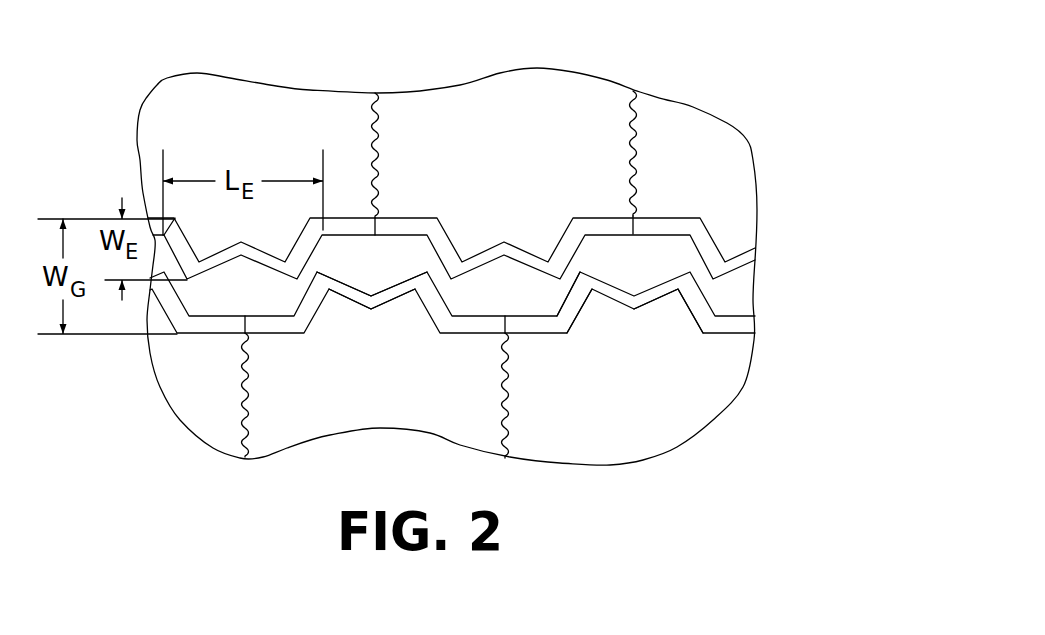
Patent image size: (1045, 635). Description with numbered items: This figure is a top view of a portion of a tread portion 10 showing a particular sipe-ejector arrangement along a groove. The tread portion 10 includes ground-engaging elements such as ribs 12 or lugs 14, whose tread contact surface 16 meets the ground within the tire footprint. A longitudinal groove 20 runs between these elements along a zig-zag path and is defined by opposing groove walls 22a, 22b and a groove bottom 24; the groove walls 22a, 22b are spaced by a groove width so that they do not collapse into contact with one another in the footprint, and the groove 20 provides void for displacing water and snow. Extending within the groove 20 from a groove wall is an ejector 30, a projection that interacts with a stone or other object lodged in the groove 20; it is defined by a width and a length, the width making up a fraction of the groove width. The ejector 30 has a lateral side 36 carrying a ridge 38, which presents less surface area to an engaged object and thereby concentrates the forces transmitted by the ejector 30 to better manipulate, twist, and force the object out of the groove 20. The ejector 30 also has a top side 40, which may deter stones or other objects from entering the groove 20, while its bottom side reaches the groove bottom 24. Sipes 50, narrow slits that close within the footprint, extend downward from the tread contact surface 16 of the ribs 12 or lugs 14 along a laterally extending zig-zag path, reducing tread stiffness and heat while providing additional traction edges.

The tread portion 10 is at (713, 82).
The rib 12 is at (447, 295).
The lug 14 is at (678, 403).
The tread contact surface 16 is at (642, 447).
The longitudinal groove 20 is at (485, 274).
The groove wall 22a is at (488, 316).
The groove wall 22b is at (690, 222).
The groove bottom 24 is at (526, 297).
The ejector 30 is at (582, 316).
The lateral side 36 is at (398, 288).
The ridge 38 is at (423, 288).
The top side 40 is at (672, 315).
The sipe 50 is at (379, 139).